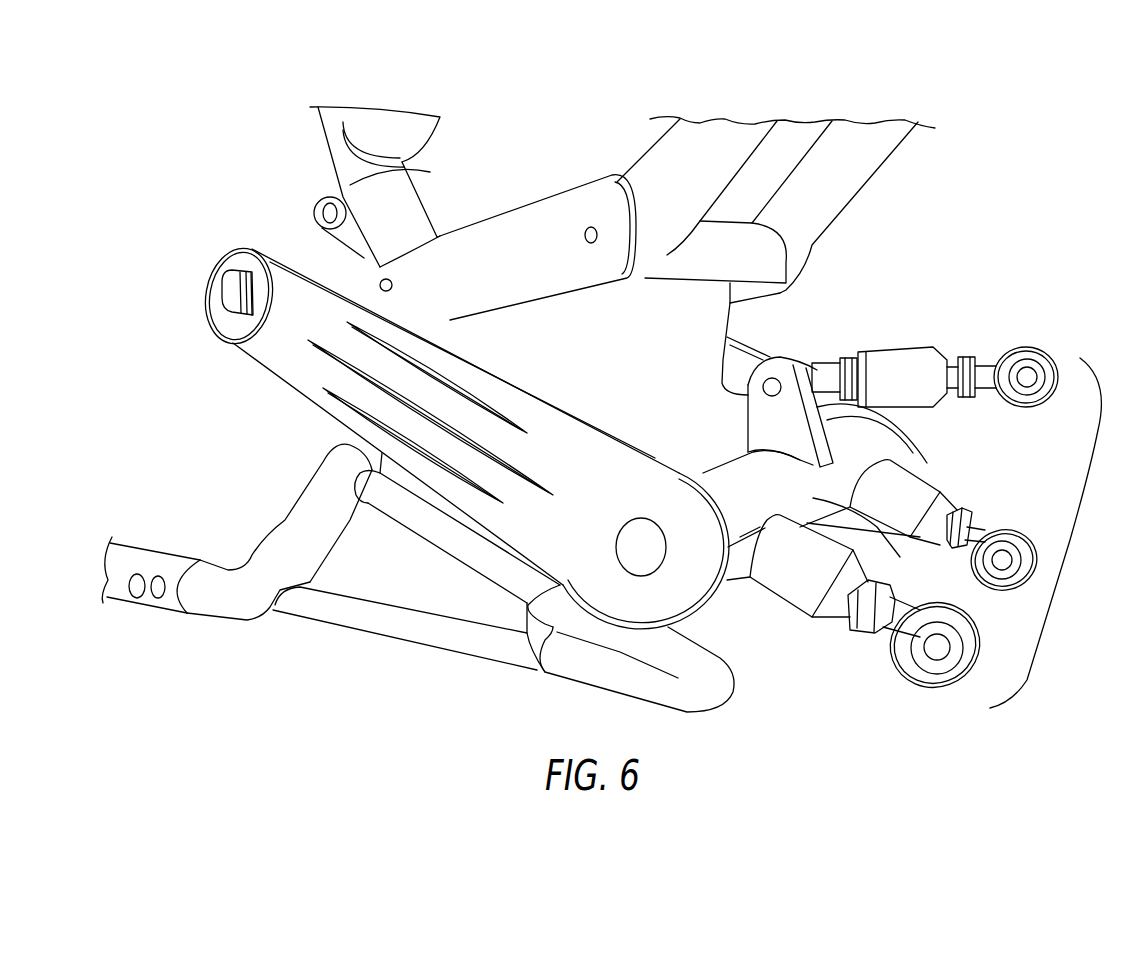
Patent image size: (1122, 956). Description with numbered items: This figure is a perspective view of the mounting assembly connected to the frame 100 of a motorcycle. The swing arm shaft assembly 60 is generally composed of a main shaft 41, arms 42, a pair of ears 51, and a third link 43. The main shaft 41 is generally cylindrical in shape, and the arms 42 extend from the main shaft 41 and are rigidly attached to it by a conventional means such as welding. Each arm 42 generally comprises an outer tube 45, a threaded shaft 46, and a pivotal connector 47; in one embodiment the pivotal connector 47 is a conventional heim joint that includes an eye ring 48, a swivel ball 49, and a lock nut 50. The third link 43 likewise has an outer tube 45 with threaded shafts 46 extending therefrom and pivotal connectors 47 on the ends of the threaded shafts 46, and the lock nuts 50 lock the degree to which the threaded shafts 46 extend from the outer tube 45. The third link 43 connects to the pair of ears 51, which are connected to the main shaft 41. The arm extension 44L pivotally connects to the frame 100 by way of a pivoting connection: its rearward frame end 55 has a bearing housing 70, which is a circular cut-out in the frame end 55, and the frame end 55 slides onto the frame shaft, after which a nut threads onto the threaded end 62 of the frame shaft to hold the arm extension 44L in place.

The frame 100 is at (494, 188).
The frame end 55 is at (287, 255).
The threaded end 62 is at (222, 283).
The bearing housing 70 is at (238, 318).
The arm extension 44L is at (287, 380).
The pair of ears 51 is at (793, 362).
The outer tube 45 is at (890, 343).
The third link 43 is at (935, 404).
The threaded shaft 46 is at (980, 360).
The pivotal connector 47 is at (1022, 353).
The arm 42 is at (947, 508).
The lock nut 50 is at (967, 510).
The main shaft 41 is at (813, 500).
The swivel ball 49 is at (923, 653).
The eye ring 48 is at (871, 624).
The swing arm shaft assembly 60 is at (1047, 533).